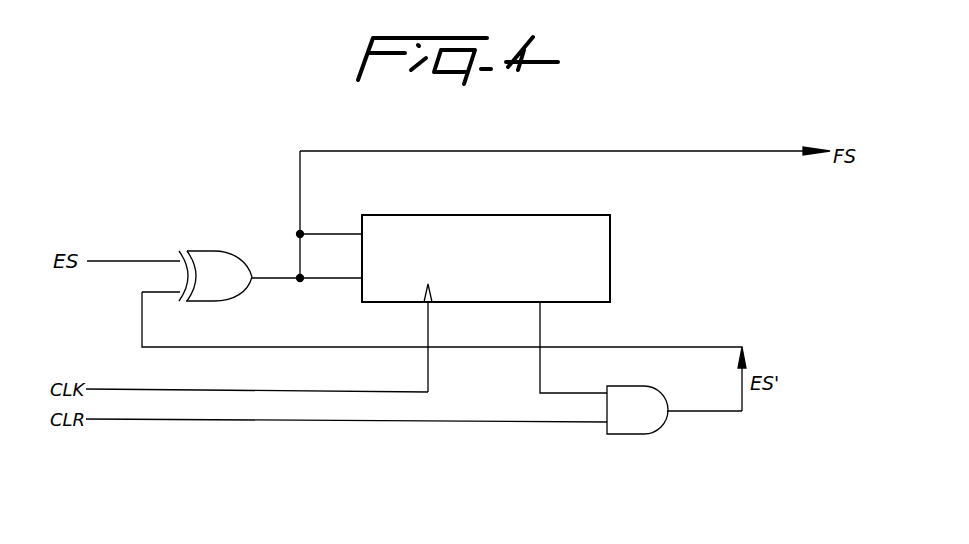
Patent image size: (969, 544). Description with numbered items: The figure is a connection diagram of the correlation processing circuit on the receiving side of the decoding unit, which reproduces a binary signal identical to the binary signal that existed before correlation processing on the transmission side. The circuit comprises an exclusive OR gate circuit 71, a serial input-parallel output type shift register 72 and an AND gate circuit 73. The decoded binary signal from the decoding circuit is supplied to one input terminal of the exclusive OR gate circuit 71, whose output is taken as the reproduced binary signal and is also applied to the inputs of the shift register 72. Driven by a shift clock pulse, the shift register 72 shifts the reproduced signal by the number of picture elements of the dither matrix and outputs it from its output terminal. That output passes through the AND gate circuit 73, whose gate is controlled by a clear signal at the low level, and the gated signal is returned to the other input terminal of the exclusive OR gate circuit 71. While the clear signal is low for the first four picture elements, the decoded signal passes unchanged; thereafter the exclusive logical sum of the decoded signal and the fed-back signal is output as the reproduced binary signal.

The exclusive OR gate circuit 71 is at (213, 272).
The serial input-parallel output type shift register 72 is at (560, 226).
The AND gate circuit 73 is at (640, 426).